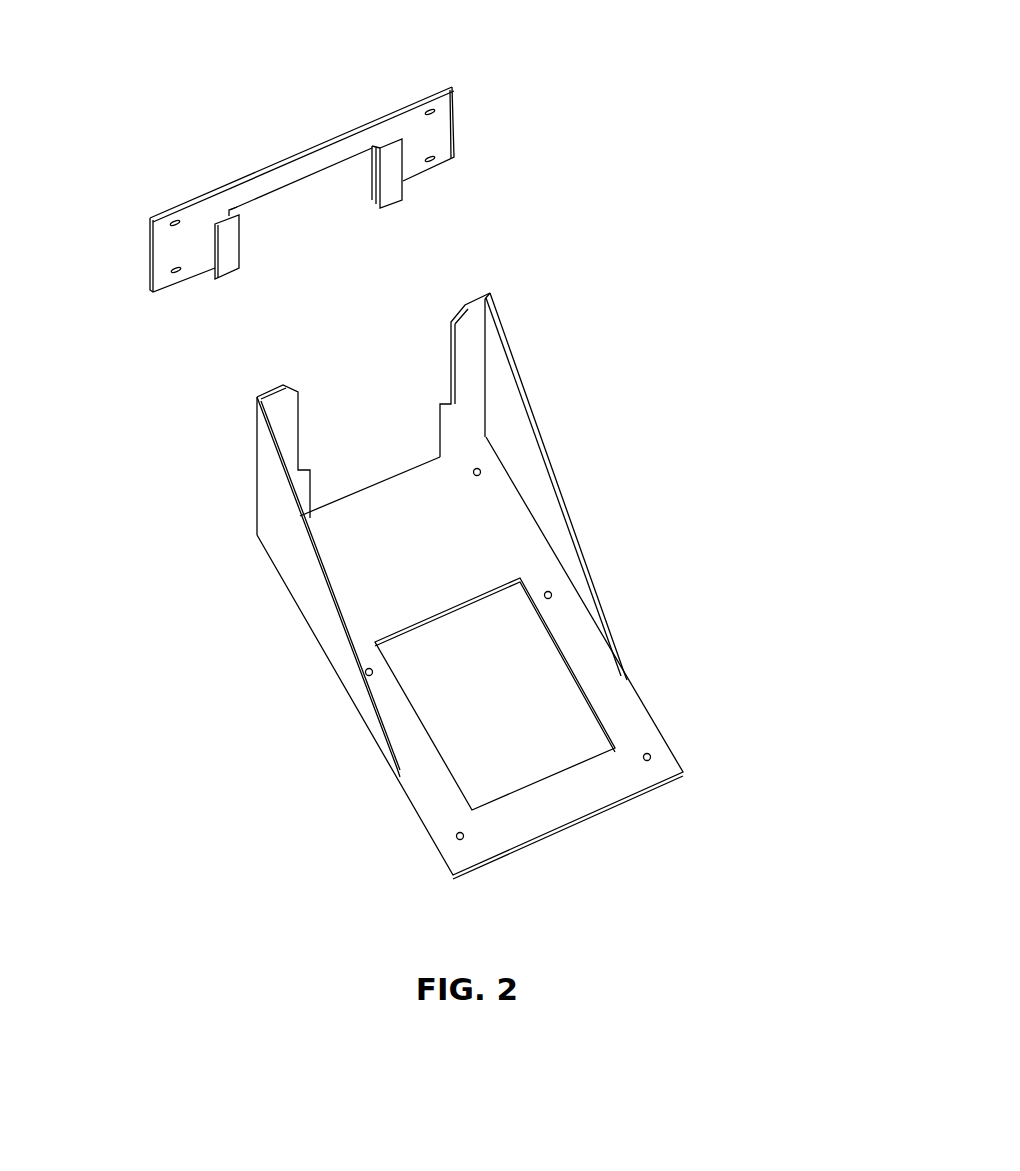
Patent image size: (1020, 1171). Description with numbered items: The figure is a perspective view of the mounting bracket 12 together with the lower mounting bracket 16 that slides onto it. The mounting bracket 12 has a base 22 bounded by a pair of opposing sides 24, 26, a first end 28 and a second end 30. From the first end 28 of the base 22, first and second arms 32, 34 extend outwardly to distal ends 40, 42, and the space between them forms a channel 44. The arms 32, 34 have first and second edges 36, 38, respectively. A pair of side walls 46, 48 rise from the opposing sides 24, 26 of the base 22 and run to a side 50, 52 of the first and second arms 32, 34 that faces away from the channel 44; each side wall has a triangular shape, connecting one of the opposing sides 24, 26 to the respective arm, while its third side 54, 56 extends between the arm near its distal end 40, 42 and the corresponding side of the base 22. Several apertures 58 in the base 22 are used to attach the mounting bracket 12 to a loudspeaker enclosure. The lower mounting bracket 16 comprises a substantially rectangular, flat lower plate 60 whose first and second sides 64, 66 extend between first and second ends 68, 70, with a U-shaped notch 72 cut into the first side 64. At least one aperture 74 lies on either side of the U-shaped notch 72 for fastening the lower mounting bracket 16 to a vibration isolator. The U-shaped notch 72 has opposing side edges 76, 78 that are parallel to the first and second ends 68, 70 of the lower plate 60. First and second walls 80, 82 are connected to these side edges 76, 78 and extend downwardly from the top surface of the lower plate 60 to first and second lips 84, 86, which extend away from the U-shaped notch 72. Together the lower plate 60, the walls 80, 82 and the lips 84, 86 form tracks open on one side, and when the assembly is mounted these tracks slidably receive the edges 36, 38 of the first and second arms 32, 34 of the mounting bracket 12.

The mounting bracket 12 is at (668, 477).
The lower mounting bracket 16 is at (543, 80).
The base 22 is at (417, 558).
The first opposing side 24 is at (413, 810).
The second opposing side 26 is at (647, 705).
The first end 28 is at (382, 480).
The second end 30 is at (550, 835).
The first arm 32 is at (285, 424).
The second arm 34 is at (472, 348).
The first edge 36 is at (300, 451).
The second edge 38 is at (451, 373).
The distal end of first arm 40 is at (260, 395).
The distal end of second arm 42 is at (463, 306).
The channel 44 is at (381, 397).
The first side wall 46 is at (298, 565).
The second side wall 48 is at (523, 462).
The side of first arm 50 is at (258, 464).
The side of second arm 52 is at (487, 403).
The third side of first side wall 54 is at (352, 640).
The third side of second side wall 56 is at (588, 575).
The apertures 58 is at (482, 480).
The lower plate 60 is at (200, 217).
The first side of lower plate 64 is at (424, 174).
The second side of lower plate 66 is at (353, 123).
The first end of lower plate 68 is at (148, 255).
The second end of lower plate 70 is at (458, 131).
The U-shaped notch 72 is at (312, 213).
The aperture 74 is at (173, 220).
The first side edge of notch 76 is at (238, 208).
The second side edge of notch 78 is at (370, 150).
The first wall 80 is at (242, 247).
The second wall 82 is at (374, 189).
The first lip 84 is at (226, 269).
The second lip 86 is at (393, 199).